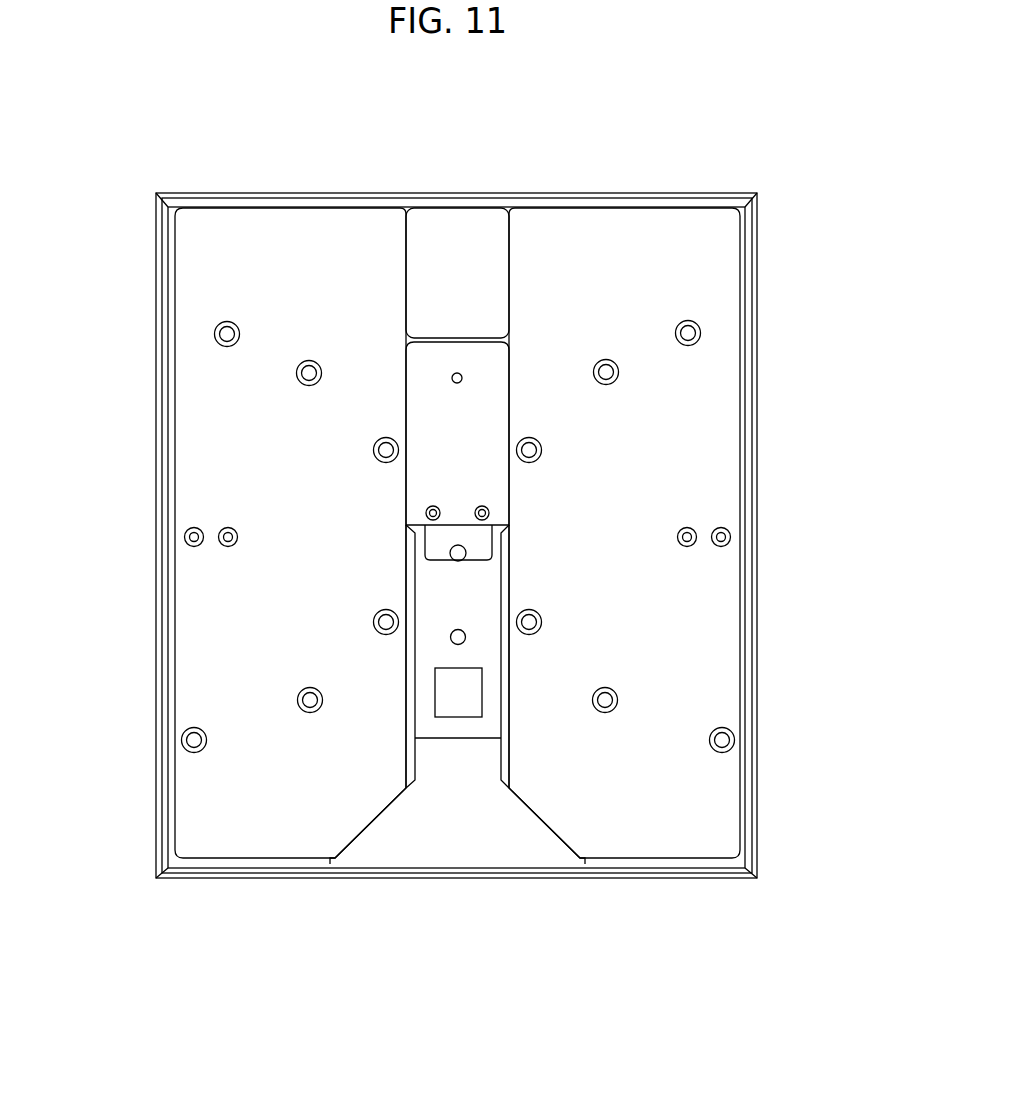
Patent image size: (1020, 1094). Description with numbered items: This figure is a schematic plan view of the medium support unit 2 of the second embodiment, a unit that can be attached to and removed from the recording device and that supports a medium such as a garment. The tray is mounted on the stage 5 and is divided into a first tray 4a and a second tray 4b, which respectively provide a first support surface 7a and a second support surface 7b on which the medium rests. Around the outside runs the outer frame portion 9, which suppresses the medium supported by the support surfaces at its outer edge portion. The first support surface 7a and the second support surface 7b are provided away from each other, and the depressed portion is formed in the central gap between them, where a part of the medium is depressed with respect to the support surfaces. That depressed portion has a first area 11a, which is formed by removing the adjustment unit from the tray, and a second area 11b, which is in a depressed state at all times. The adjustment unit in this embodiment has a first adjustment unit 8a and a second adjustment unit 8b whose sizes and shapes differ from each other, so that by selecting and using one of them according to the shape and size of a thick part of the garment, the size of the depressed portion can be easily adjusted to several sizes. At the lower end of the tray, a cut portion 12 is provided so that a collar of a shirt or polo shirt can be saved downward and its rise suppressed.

The medium support unit 2 is at (717, 144).
The first tray 4a is at (260, 242).
The second tray 4b is at (597, 242).
The stage 5 is at (457, 730).
The first support surface 7a is at (222, 462).
The second support surface 7b is at (677, 460).
The first adjustment unit 8a is at (422, 393).
The second adjustment unit 8b is at (431, 232).
The outer frame portion 9 is at (748, 333).
The first area 11a is at (469, 265).
The second area 11b is at (478, 597).
The cut portion 12 is at (371, 823).